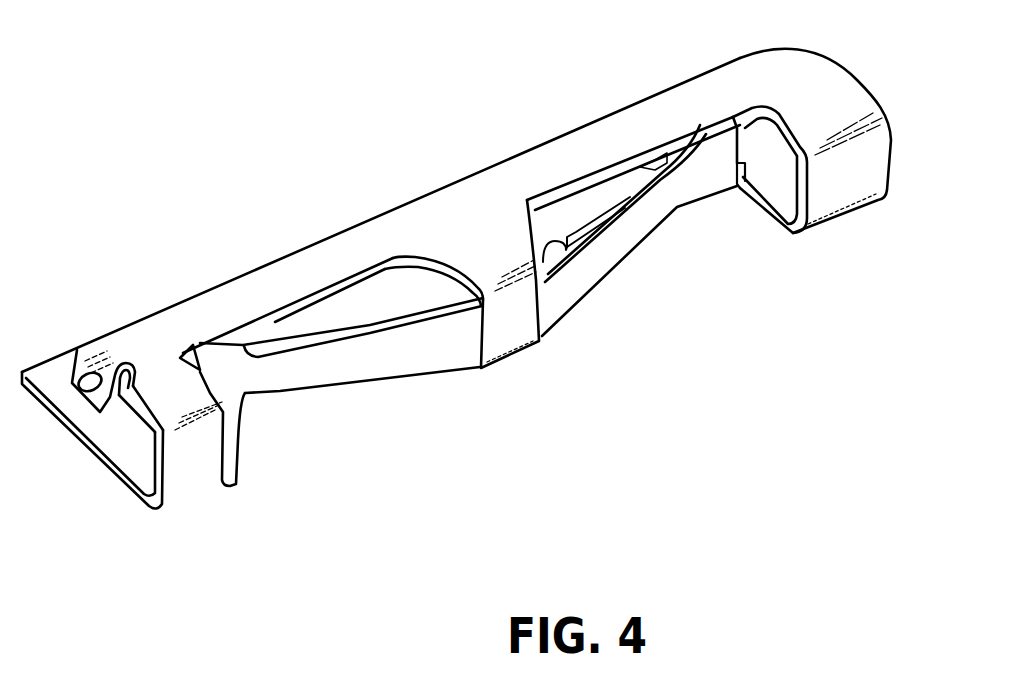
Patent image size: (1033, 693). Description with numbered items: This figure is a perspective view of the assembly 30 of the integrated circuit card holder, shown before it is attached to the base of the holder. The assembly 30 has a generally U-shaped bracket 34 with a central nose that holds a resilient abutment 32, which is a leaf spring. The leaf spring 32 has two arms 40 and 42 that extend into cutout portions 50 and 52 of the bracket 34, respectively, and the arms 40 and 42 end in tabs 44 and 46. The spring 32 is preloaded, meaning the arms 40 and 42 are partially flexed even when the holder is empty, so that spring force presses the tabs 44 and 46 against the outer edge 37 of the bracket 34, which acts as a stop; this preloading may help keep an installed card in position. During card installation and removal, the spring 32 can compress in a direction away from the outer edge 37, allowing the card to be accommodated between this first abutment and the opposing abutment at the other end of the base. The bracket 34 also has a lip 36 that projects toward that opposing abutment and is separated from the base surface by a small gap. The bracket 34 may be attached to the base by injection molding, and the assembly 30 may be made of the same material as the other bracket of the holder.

The assembly 30 is at (236, 195).
The resilient abutment 32 is at (595, 270).
The bracket 34 is at (848, 75).
The lip 36 is at (350, 228).
The outer edge 37 is at (353, 279).
The arm 40 is at (320, 372).
The arm 42 is at (677, 207).
The tab 44 is at (231, 380).
The tab 46 is at (717, 163).
The cutout portion 50 is at (385, 437).
The cutout portion 52 is at (683, 303).